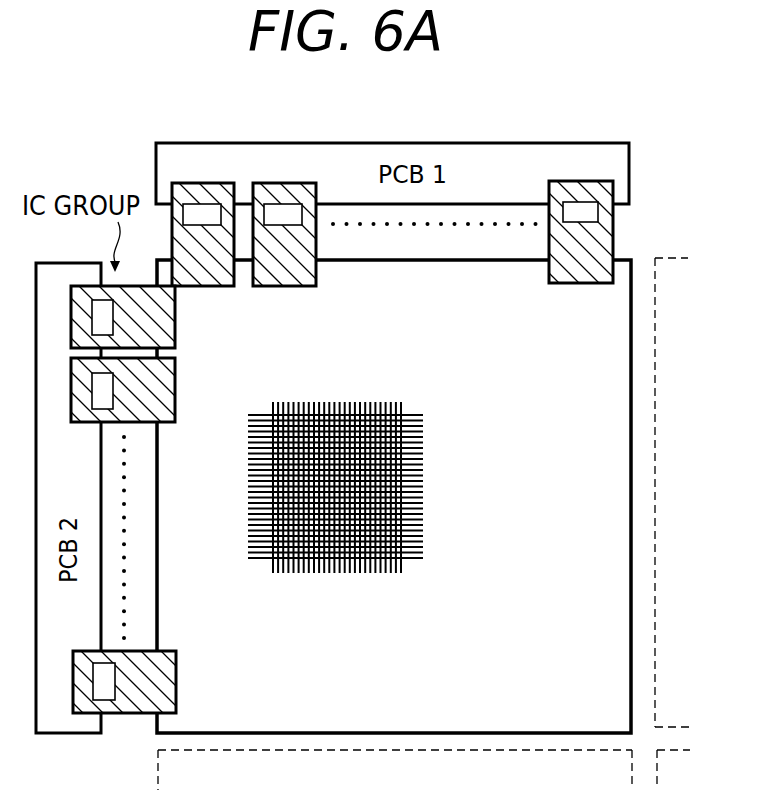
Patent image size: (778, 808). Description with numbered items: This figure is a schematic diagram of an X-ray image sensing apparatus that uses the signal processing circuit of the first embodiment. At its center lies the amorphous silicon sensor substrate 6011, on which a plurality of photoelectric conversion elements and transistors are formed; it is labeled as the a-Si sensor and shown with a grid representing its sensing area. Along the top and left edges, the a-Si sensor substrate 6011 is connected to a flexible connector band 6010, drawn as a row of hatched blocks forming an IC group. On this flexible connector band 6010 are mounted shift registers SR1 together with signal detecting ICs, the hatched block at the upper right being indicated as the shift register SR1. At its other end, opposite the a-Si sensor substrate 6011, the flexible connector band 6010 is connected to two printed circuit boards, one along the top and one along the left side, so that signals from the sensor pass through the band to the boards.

The flexible connector band 6010 is at (594, 181).
The shift register SR1 is at (634, 192).
The a-Si sensor substrate 6011 is at (603, 522).